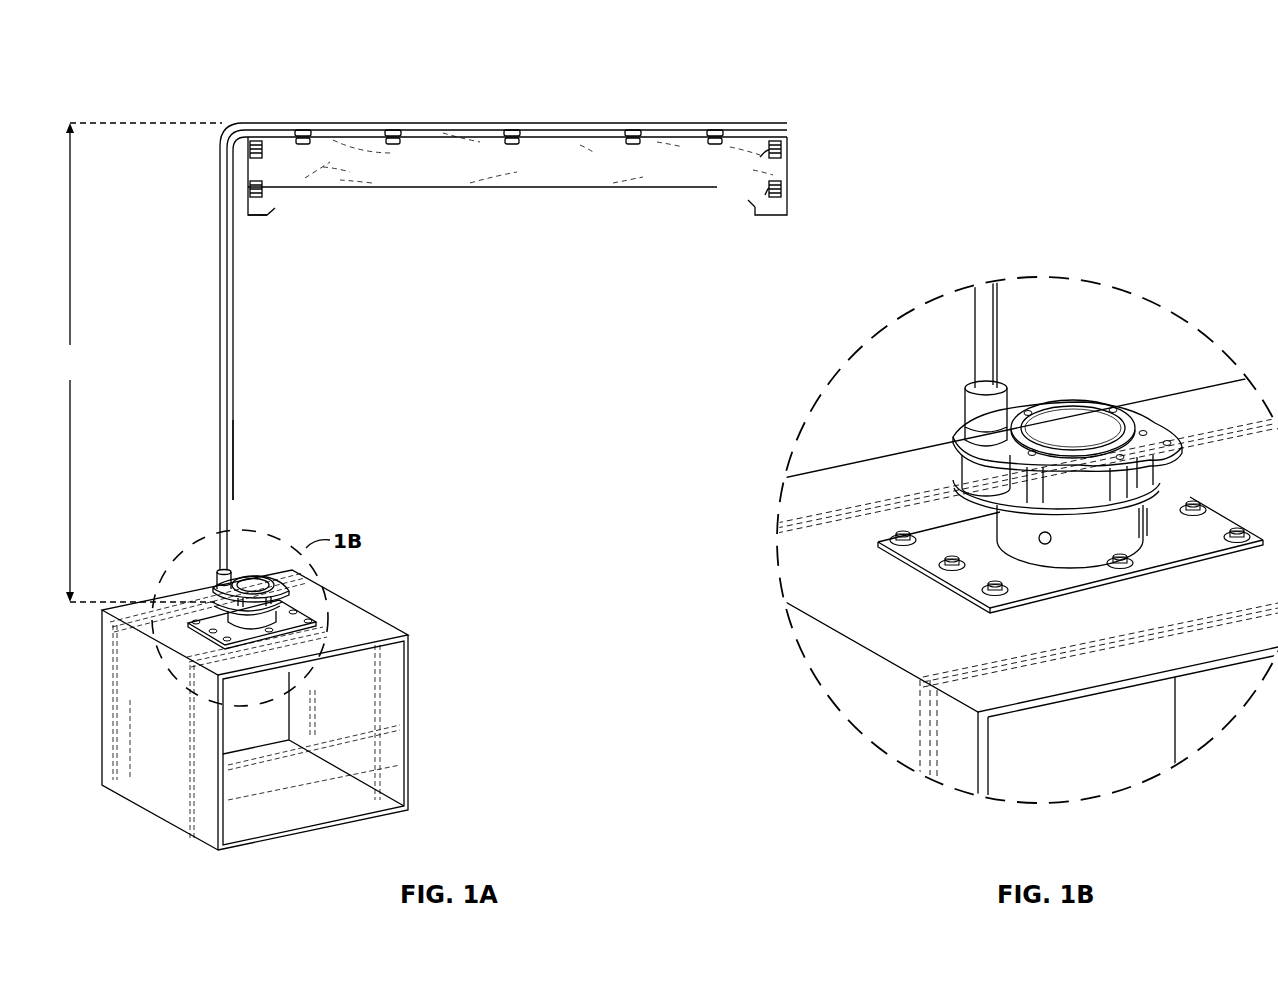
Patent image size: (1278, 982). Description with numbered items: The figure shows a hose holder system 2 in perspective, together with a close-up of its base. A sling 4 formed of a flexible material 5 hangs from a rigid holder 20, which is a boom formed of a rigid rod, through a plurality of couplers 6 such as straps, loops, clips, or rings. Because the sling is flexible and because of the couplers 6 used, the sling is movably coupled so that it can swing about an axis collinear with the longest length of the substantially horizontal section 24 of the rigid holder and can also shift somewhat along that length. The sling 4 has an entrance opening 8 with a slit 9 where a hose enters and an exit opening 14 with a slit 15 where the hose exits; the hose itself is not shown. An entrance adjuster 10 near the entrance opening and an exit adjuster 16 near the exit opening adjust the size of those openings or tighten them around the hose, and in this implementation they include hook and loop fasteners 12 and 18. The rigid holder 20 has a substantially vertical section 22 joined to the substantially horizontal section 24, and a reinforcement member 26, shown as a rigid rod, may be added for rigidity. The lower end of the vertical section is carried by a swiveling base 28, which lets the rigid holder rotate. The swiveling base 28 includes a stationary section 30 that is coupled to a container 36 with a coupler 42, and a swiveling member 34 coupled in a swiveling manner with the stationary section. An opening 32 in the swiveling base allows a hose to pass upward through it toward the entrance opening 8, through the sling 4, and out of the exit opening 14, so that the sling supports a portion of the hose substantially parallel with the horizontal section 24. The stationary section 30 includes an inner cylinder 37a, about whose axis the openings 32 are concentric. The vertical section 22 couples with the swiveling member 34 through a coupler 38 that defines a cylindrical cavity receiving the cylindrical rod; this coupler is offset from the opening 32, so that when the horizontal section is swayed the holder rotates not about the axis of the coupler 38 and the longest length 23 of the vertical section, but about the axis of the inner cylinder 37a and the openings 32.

In FIG. 1A, the hose holder system 2 is at (231, 112).
In FIG. 1A, the sling 4 is at (600, 170).
In FIG. 1A, the flexible material 5 is at (470, 172).
In FIG. 1A, the couplers 6 is at (510, 128).
In FIG. 1A, the entrance opening 8 is at (260, 216).
In FIG. 1A, the slit 9 is at (252, 217).
In FIG. 1A, the entrance adjuster 10 is at (250, 150).
In FIG. 1A, the hook and loop fasteners 12 is at (262, 153).
In FIG. 1A, the exit opening 14 is at (775, 216).
In FIG. 1A, the slit 15 is at (760, 216).
In FIG. 1A, the exit adjuster 16 is at (783, 150).
In FIG. 1A, the hook and loop fasteners 18 is at (760, 157).
In FIG. 1A, the rigid holder 20 is at (398, 124).
In FIG. 1A, the substantially vertical section 22 is at (218, 380).
In FIG. 1A, the longest length 23 is at (140, 362).
In FIG. 1A, the substantially horizontal section 24 is at (452, 124).
In FIG. 1A, the reinforcement member 26 is at (236, 442).
In FIG. 1A, the swiveling base 28 is at (270, 578).
In FIG. 1B, the swiveling base 28 is at (1078, 410).
In FIG. 1A, the stationary section 30 is at (293, 600).
In FIG. 1B, the stationary section 30 is at (1010, 527).
In FIG. 1B, the opening 32 is at (1058, 413).
In FIG. 1A, the swiveling member 34 is at (225, 598).
In FIG. 1B, the swiveling member 34 is at (1145, 430).
In FIG. 1A, the container 36 is at (408, 634).
In FIG. 1B, the container 36 is at (920, 455).
In FIG. 1B, the inner cylinder 37a is at (1093, 425).
In FIG. 1A, the coupler 38 is at (218, 578).
In FIG. 1B, the coupler 38 is at (978, 413).
In FIG. 1A, the coupler 42 is at (212, 620).
In FIG. 1B, the coupler 42 is at (935, 540).